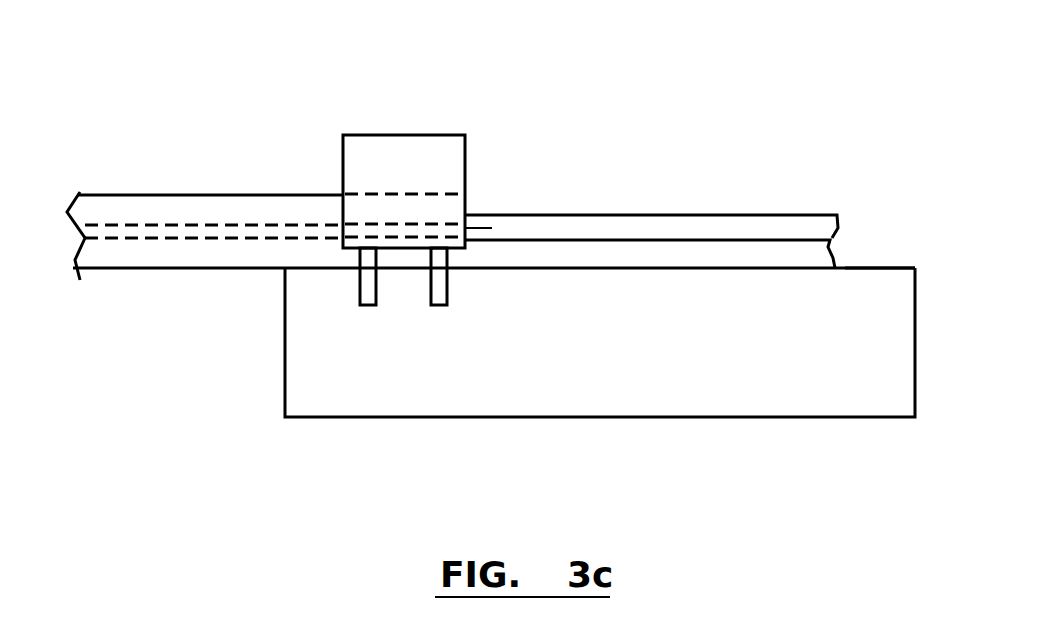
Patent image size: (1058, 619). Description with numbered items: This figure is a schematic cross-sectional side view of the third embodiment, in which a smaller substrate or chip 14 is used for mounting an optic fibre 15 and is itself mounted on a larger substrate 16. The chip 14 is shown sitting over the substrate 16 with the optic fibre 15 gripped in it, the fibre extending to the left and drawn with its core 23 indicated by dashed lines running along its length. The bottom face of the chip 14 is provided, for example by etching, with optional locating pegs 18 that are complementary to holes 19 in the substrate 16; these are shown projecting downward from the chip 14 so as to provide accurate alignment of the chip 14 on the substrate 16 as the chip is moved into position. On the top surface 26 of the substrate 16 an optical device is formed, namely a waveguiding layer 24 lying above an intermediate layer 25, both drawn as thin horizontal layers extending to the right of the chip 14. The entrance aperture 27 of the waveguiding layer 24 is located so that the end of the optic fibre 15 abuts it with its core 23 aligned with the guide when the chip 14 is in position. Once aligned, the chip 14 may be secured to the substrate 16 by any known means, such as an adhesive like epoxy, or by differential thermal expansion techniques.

The chip 14 is at (400, 157).
The optic fibre 15 is at (142, 193).
The substrate 16 is at (677, 381).
The locating pegs 18 is at (366, 305).
The holes 19 is at (401, 362).
The core 23 is at (167, 233).
The waveguiding layer 24 is at (725, 228).
The intermediate layer 25 is at (637, 255).
The top surface 26 is at (879, 267).
The entrance aperture 27 is at (492, 228).